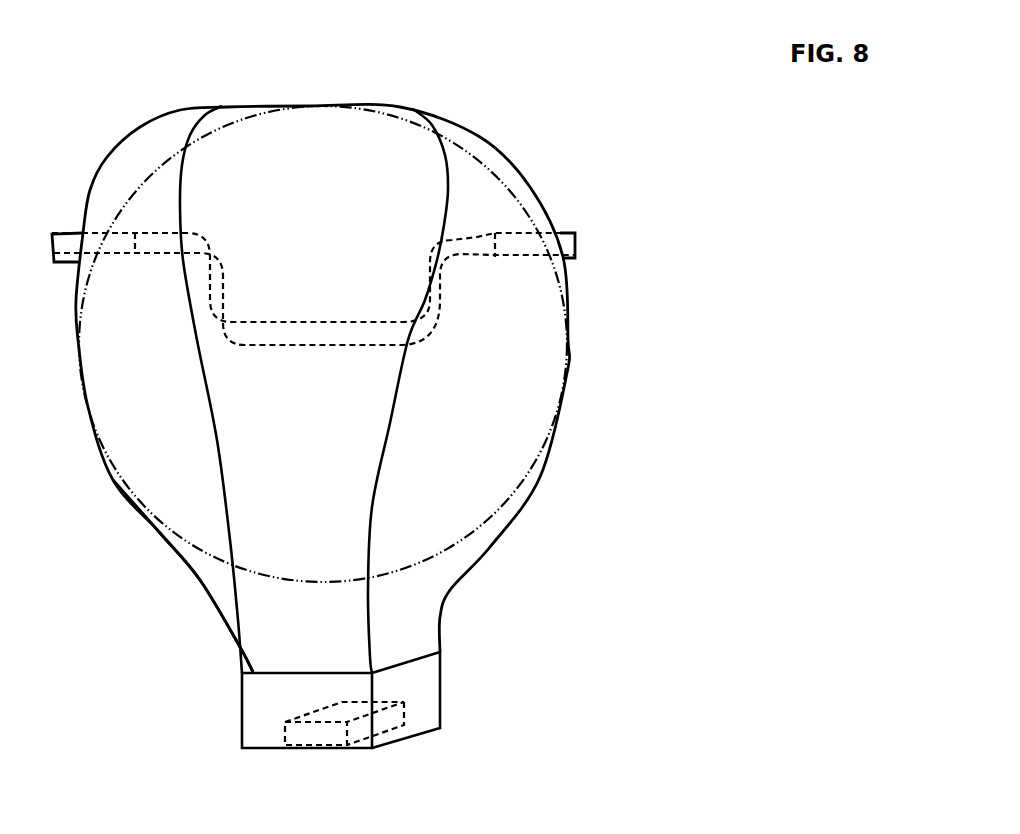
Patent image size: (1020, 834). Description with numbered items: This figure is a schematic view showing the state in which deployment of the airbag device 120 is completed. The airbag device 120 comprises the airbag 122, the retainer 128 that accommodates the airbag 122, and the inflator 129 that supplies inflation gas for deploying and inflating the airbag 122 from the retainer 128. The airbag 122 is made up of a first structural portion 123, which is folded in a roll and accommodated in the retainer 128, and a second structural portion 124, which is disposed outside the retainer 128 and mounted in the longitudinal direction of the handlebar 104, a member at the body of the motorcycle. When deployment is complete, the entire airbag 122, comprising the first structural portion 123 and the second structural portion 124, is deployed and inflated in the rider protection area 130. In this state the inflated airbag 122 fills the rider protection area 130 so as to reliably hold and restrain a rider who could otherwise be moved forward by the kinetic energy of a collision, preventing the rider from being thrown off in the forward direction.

The handlebar 104 is at (477, 237).
The airbag device 120 is at (390, 431).
The airbag 122 is at (545, 476).
The first structural portion 123 is at (485, 548).
The second structural portion 124 is at (338, 132).
The retainer 128 is at (448, 688).
The inflator 129 is at (392, 727).
The rider protection area 130 is at (160, 533).